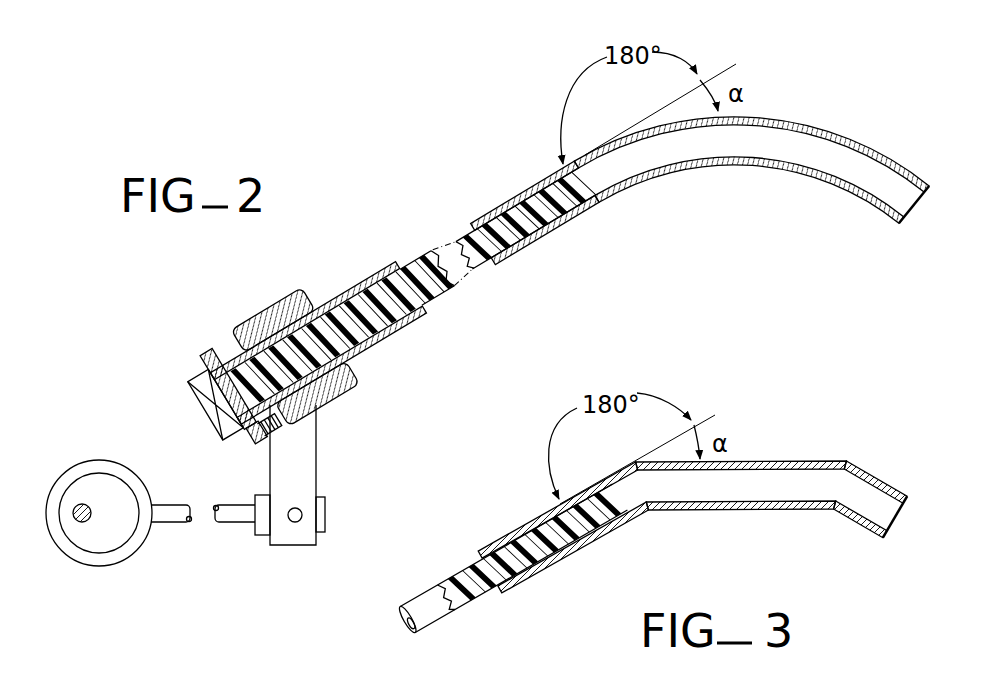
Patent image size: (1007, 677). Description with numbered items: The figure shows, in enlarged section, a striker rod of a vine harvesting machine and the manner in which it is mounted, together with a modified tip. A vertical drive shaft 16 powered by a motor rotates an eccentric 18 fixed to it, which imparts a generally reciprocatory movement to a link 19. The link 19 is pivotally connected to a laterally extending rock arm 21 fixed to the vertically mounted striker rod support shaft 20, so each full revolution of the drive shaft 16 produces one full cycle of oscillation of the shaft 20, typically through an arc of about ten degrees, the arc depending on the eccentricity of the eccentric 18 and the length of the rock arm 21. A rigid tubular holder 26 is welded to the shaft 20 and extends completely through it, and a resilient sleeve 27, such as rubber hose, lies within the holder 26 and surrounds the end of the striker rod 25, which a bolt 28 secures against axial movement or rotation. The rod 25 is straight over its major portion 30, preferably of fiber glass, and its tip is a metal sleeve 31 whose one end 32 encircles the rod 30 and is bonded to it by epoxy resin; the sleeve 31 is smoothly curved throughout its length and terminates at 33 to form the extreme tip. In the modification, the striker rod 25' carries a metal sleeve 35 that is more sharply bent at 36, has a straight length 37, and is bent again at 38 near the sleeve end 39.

In FIG. 2, the drive shaft 16 is at (81, 504).
In FIG. 2, the eccentric 18 is at (120, 462).
In FIG. 2, the link 19 is at (225, 524).
In FIG. 2, the striker rod support shaft 20 is at (336, 395).
In FIG. 2, the rock arm 21 is at (316, 468).
In FIG. 2, the striker rod 25 is at (414, 285).
In FIG. 3, the striker rod 25' is at (512, 559).
In FIG. 2, the tubular holder 26 is at (340, 291).
In FIG. 2, the resilient sleeve 27 is at (326, 290).
In FIG. 2, the bolt 28 is at (205, 372).
In FIG. 2, the straight portion 30 is at (443, 288).
In FIG. 3, the straight portion 30 is at (485, 589).
In FIG. 2, the metal sleeve 31 is at (762, 177).
In FIG. 2, the end of sleeve 32 is at (510, 198).
In FIG. 2, the sleeve termination 33 is at (911, 220).
In FIG. 3, the metal sleeve 35 is at (755, 512).
In FIG. 3, the sharp bend 36 is at (650, 516).
In FIG. 3, the straight length 37 is at (776, 460).
In FIG. 3, the second bend 38 is at (861, 467).
In FIG. 3, the sleeve end 39 is at (891, 530).